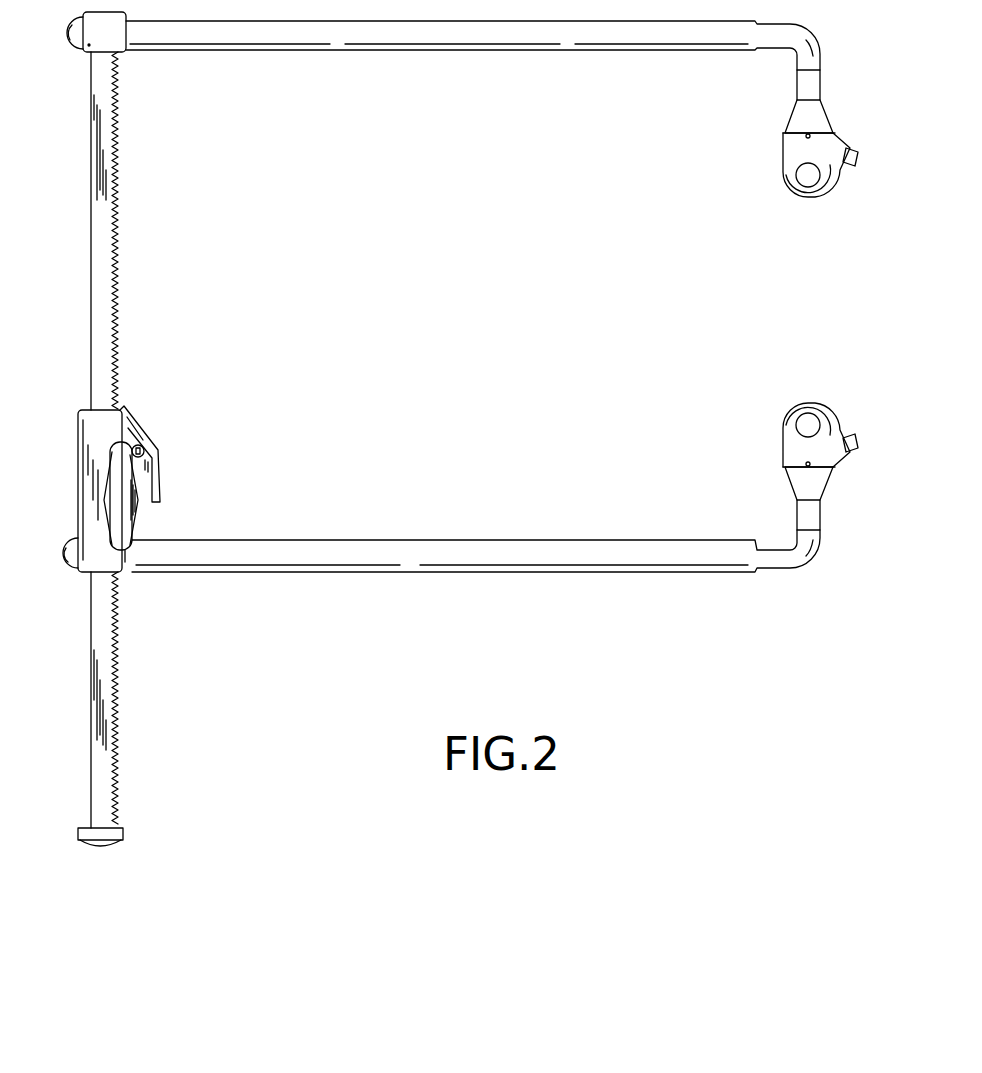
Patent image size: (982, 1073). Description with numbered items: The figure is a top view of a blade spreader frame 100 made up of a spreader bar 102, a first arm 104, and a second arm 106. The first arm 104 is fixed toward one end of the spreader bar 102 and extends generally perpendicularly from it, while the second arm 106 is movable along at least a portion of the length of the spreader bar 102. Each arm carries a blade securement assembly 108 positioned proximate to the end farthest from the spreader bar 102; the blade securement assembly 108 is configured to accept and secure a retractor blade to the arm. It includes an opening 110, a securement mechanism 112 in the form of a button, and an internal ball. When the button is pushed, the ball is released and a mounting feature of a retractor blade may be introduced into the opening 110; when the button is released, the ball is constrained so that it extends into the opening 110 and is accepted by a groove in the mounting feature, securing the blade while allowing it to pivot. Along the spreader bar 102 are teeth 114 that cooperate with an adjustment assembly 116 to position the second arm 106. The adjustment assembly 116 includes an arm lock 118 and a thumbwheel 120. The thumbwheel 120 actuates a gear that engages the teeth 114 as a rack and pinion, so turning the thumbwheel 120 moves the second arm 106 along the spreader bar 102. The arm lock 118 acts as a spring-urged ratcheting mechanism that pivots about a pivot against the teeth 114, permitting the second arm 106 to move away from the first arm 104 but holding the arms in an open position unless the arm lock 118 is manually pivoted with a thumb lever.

The blade spreader frame 100 is at (300, 658).
The spreader bar 102 is at (83, 790).
The first arm 104 is at (441, 50).
The second arm 106 is at (348, 541).
The blade securement assembly 108 is at (742, 189).
The opening 110 is at (802, 183).
The securement mechanism 112 is at (860, 162).
The teeth 114 is at (120, 212).
The adjustment assembly 116 is at (68, 436).
The arm lock 118 is at (140, 430).
The thumbwheel 120 is at (135, 518).